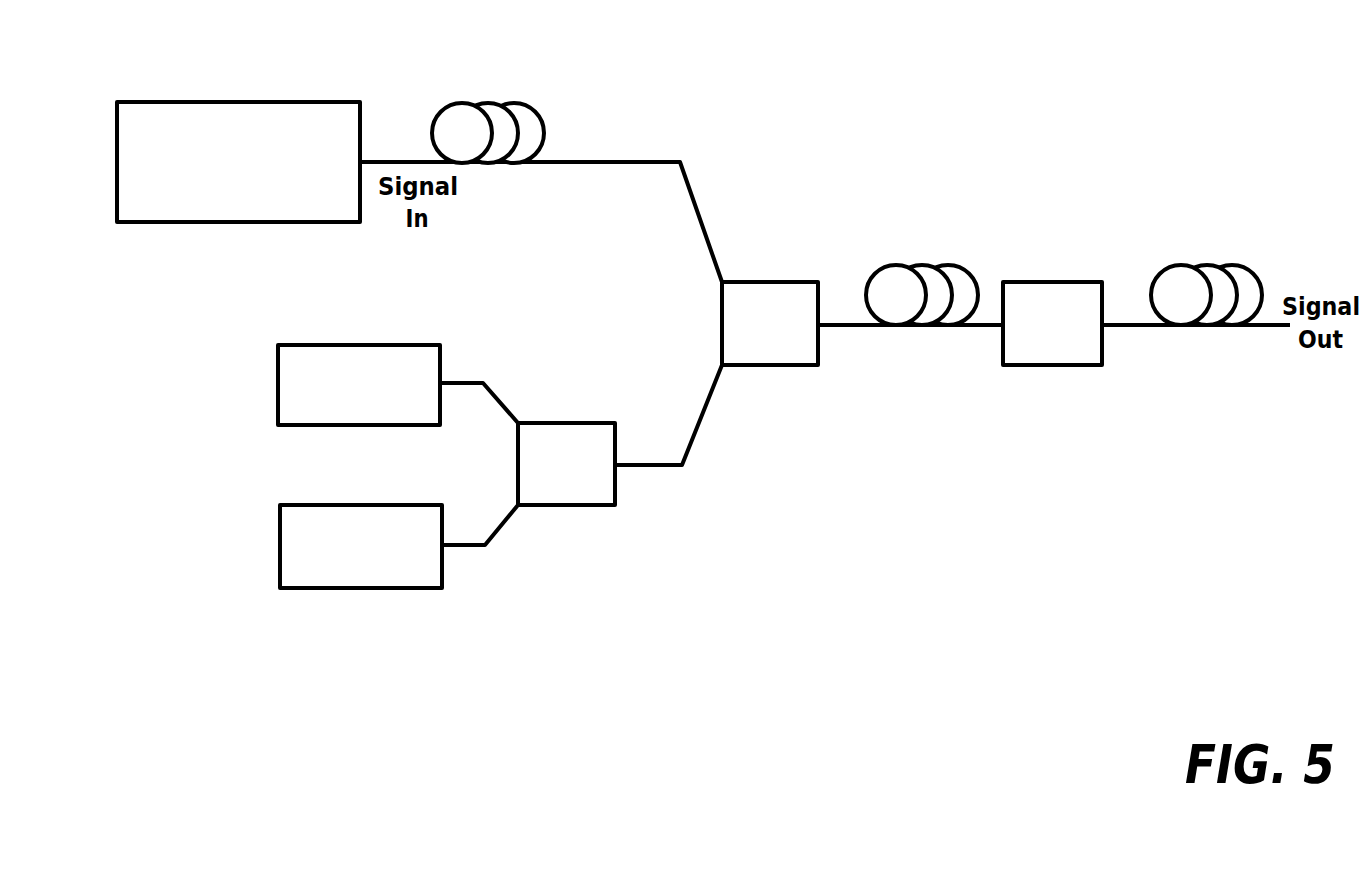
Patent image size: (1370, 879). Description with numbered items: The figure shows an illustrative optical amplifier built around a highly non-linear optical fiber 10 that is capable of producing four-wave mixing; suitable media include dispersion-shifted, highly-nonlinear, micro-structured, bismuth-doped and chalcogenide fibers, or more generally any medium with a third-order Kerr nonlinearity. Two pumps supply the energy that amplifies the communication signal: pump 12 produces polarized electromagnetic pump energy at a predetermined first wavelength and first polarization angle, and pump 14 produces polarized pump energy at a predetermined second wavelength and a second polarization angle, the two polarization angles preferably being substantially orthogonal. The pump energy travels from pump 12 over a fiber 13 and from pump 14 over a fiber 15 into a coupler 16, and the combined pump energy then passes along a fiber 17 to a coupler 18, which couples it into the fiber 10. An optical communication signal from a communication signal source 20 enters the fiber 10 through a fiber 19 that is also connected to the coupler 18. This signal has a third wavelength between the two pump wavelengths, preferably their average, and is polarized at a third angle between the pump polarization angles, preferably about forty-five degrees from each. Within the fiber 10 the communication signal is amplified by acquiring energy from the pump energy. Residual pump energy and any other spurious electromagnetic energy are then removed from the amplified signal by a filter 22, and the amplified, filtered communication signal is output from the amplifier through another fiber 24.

The highly non-linear optical fiber 10 is at (980, 328).
The pump 12 is at (278, 395).
The fiber 13 is at (500, 395).
The pump 14 is at (280, 556).
The fiber 15 is at (500, 540).
The coupler 16 is at (600, 507).
The fiber 17 is at (700, 420).
The coupler 18 is at (765, 282).
The fiber 19 is at (637, 160).
The communication signal source 20 is at (243, 100).
The filter 22 is at (1060, 282).
The fiber 24 is at (1282, 328).